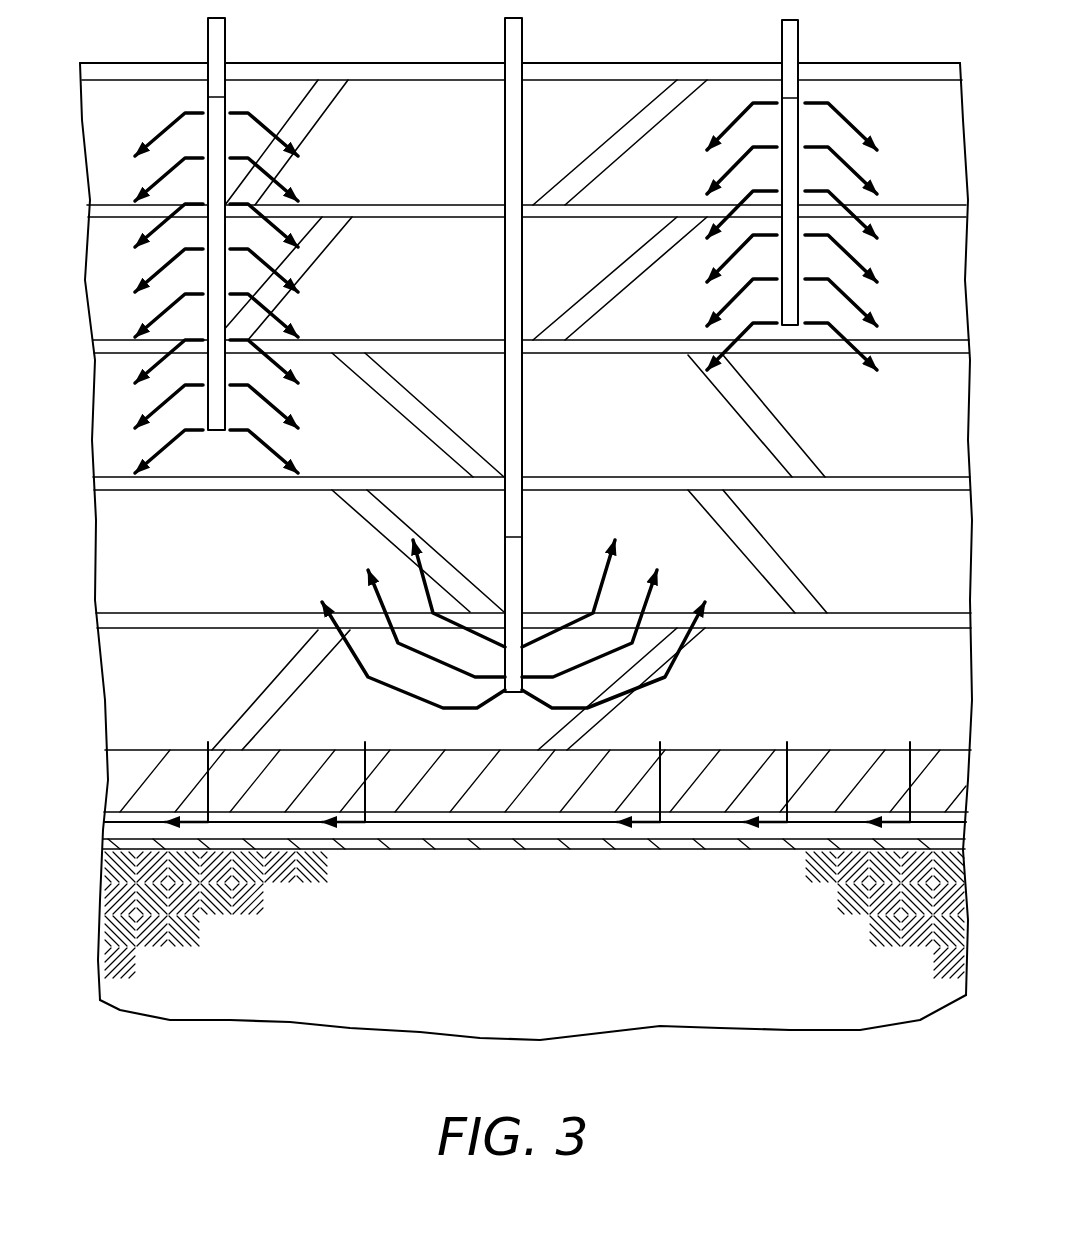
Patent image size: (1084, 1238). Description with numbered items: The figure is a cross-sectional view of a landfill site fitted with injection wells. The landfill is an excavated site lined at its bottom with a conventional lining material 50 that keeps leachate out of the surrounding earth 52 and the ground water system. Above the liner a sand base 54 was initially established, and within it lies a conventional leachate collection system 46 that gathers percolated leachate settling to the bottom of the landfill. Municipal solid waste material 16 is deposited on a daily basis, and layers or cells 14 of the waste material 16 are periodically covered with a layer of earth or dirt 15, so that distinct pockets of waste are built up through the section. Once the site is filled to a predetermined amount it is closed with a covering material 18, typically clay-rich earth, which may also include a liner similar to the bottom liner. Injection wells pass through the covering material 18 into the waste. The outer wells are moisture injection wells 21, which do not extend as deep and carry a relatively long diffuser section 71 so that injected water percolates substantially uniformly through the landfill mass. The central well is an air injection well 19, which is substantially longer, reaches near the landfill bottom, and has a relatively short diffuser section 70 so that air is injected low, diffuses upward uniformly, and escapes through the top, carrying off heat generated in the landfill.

The cells 14 is at (923, 571).
The layer of earth or dirt 15 is at (930, 348).
The waste material 16 is at (860, 429).
The covering material 18 is at (608, 74).
The air injection well 19 is at (504, 42).
The moisture injection well 21 is at (228, 47).
The leachate collection system 46 is at (380, 815).
The lining material 50 is at (643, 845).
The surrounding earth 52 is at (537, 967).
The sand base 54 is at (508, 795).
The diffuser section 70 is at (513, 575).
The diffuser section 71 is at (215, 234).